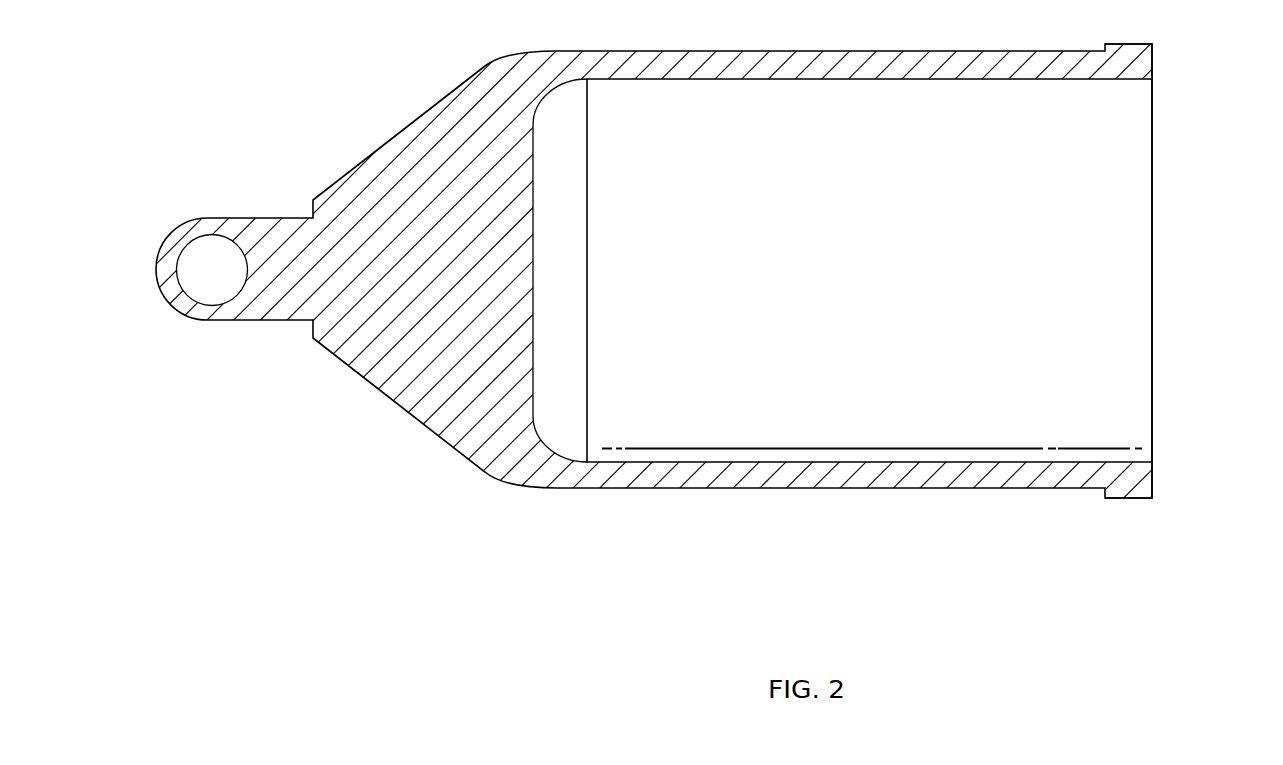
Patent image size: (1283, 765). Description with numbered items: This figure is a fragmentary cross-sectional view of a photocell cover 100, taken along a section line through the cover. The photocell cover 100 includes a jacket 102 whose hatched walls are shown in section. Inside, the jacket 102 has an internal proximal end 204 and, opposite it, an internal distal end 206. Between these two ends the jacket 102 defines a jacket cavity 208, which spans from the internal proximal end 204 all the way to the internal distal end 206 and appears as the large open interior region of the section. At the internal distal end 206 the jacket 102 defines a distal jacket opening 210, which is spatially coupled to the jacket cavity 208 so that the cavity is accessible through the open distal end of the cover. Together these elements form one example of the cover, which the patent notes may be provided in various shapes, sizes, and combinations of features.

The photocell cover 100 is at (830, 664).
The jacket 102 is at (652, 481).
The internal proximal end 204 is at (536, 353).
The internal distal end 206 is at (1142, 282).
The jacket cavity 208 is at (842, 247).
The distal jacket opening 210 is at (1155, 155).